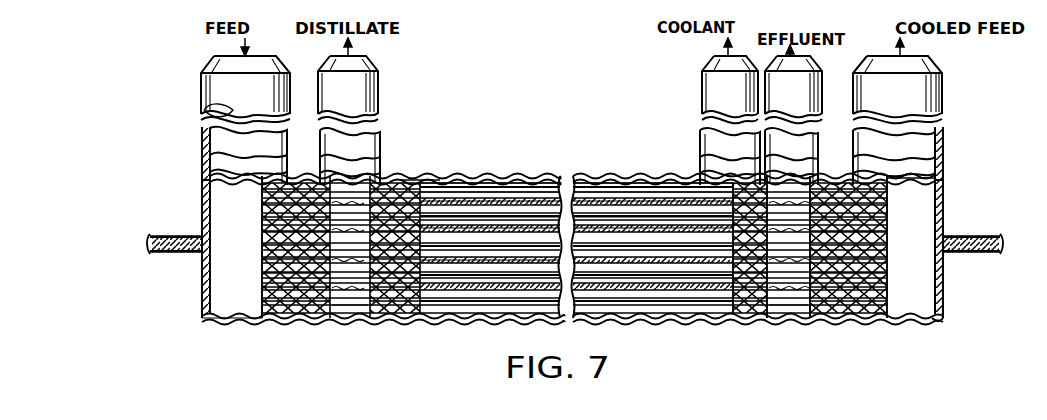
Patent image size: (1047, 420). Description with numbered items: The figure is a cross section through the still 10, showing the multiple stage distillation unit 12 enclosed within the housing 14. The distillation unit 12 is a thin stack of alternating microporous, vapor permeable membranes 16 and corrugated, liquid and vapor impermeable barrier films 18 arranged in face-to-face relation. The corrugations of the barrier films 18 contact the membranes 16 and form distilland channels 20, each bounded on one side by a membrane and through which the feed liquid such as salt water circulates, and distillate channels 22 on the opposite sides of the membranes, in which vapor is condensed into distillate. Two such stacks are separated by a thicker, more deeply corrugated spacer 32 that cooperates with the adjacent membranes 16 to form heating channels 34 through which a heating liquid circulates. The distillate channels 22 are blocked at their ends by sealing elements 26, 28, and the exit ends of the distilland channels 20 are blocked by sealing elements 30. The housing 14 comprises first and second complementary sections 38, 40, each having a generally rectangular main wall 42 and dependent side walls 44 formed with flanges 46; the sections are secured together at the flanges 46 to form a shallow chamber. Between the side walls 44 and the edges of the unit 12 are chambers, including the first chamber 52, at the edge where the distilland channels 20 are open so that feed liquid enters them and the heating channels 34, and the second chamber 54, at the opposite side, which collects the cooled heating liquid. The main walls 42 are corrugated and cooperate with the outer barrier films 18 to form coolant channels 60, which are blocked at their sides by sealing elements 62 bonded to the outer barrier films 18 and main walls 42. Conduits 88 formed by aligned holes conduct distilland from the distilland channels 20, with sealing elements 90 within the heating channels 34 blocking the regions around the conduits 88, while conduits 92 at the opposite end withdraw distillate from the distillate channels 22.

The still 10 is at (301, 322).
The multiple stage distillation unit 12 is at (893, 240).
The housing 14 is at (945, 318).
The microporous vapor permeable membrane 16 is at (458, 292).
The barrier film 18 is at (500, 260).
The distilland channel 20 is at (592, 186).
The distillate channel 22 is at (623, 222).
The sealing element 26 is at (262, 266).
The sealing element 28 is at (262, 214).
The sealing element 30 is at (992, 300).
The corrugated spacer 32 is at (512, 300).
The heating channel 34 is at (422, 182).
The first housing section 38 is at (945, 182).
The second housing section 40 is at (204, 316).
The main wall 42 is at (514, 180).
The side wall 44 is at (208, 182).
The flange 46 is at (150, 246).
The first chamber 52 is at (230, 216).
The second chamber 54 is at (943, 305).
The coolant channel 60 is at (650, 178).
The sealing element 62 is at (300, 178).
The conduit 88 is at (800, 312).
The sealing element 90 is at (710, 240).
The conduit 92 is at (352, 316).